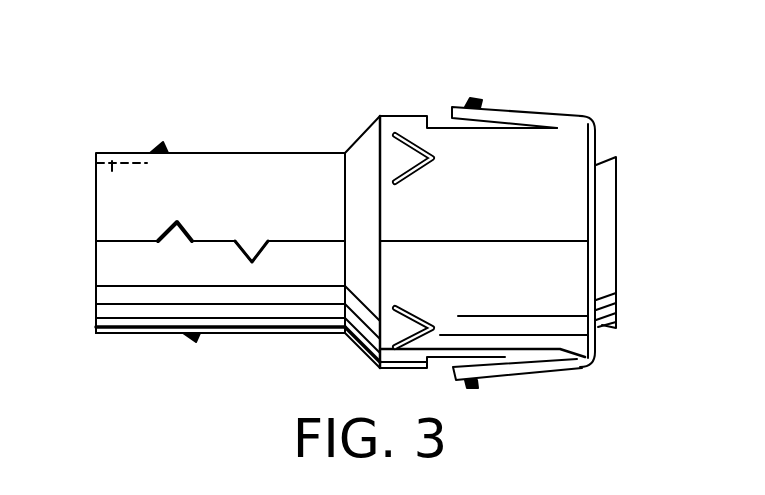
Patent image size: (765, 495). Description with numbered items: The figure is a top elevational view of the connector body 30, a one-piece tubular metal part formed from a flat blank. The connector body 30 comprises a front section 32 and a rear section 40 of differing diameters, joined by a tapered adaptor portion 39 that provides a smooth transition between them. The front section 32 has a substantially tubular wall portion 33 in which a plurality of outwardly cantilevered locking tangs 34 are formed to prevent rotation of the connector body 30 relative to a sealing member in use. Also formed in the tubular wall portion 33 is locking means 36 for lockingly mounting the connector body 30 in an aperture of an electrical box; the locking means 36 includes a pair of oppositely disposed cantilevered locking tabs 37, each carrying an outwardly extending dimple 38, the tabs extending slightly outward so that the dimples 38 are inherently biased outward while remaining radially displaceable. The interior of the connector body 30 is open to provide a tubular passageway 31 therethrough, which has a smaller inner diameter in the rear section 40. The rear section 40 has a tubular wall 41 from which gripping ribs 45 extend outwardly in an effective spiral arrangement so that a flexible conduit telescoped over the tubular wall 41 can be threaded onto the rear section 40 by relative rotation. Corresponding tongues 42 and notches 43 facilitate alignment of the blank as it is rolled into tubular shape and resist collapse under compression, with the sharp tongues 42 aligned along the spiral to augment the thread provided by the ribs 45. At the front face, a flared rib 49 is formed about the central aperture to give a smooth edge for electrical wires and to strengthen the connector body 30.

The connector body 30 is at (356, 225).
The tubular passageway 31 is at (110, 170).
The front section 32 is at (474, 225).
The tubular wall portion 33 is at (563, 153).
The locking tangs 34 is at (408, 153).
The locking means 36 is at (495, 250).
The locking tab 37 is at (502, 112).
The dimple 38 is at (468, 97).
The tapered adaptor portion 39 is at (357, 143).
The rear section 40 is at (193, 219).
The tubular wall 41 is at (122, 300).
The tongues 42 is at (178, 221).
The notches 43 is at (162, 243).
The gripping ribs 45 is at (193, 244).
The flared rib 49 is at (607, 330).